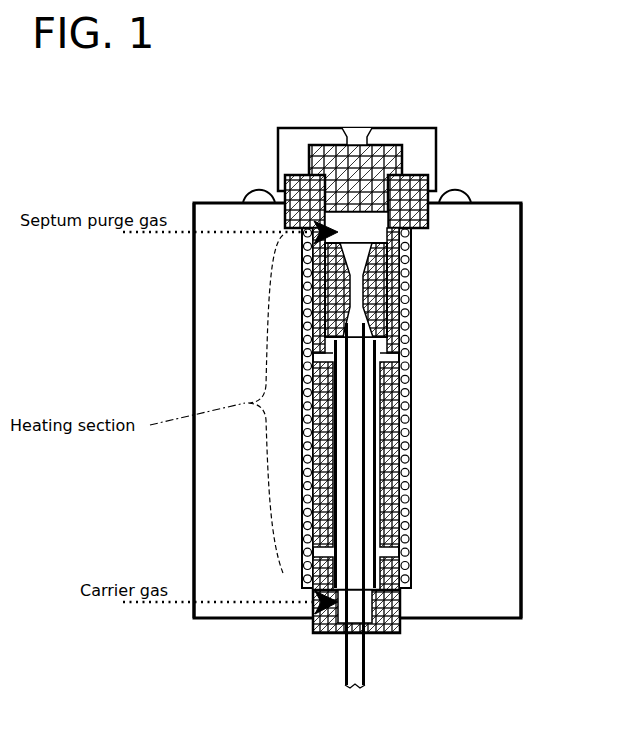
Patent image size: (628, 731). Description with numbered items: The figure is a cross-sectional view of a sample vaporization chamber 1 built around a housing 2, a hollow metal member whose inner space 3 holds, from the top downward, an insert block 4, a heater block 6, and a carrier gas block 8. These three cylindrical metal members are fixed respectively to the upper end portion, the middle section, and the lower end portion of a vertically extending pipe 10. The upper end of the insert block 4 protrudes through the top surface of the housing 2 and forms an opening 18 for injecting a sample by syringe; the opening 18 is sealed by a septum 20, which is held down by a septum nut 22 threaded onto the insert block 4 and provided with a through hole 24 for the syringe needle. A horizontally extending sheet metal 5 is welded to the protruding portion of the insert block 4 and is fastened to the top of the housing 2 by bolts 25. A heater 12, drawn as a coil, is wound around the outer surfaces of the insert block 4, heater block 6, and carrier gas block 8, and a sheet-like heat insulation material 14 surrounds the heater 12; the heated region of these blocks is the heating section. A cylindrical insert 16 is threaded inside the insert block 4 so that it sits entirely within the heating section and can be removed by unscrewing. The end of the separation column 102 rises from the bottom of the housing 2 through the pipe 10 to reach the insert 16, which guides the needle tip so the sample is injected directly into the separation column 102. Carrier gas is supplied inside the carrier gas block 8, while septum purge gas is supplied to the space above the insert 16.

The sample vaporization chamber 1 is at (530, 195).
The housing 2 is at (523, 313).
The inner space 3 is at (235, 347).
The insert block 4 is at (408, 280).
The sheet metal 5 is at (283, 200).
The heater block 6 is at (390, 465).
The carrier gas block 8 is at (395, 600).
The pipe 10 is at (398, 490).
The heater 12 is at (412, 380).
The heat insulation material 14 is at (413, 432).
The insert 16 is at (307, 287).
The opening 18 is at (355, 227).
The septum 20 is at (377, 162).
The septum nut 22 is at (437, 133).
The through hole 24 is at (356, 128).
The bolts 25 is at (257, 192).
The separation column 102 is at (368, 653).